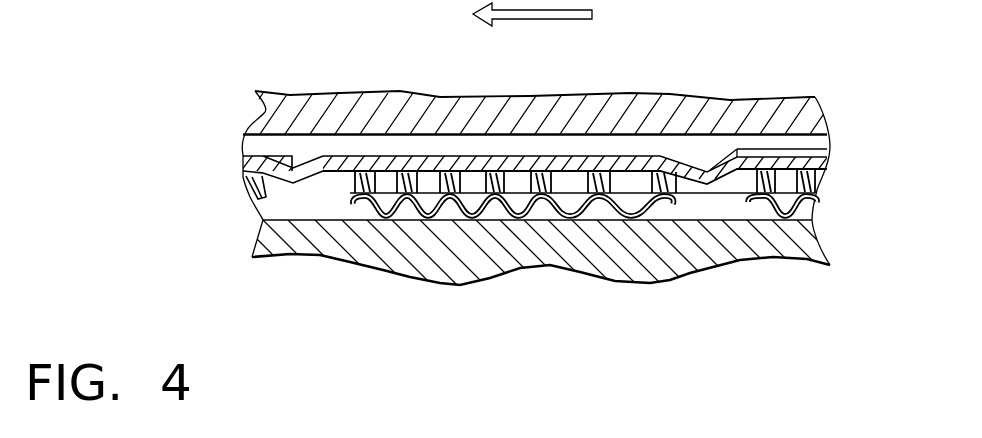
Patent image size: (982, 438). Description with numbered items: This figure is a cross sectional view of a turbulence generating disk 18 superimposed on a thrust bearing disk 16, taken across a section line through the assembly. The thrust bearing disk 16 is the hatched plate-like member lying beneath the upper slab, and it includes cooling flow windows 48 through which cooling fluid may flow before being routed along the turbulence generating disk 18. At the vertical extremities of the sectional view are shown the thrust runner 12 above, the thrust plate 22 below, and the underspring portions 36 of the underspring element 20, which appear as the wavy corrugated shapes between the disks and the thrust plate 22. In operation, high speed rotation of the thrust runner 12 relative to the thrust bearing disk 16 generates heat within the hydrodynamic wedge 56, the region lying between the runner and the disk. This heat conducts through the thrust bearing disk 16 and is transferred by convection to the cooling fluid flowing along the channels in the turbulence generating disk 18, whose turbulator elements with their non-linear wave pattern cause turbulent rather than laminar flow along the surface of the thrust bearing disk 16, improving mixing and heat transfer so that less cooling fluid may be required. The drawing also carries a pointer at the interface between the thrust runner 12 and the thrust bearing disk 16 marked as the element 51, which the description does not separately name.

The thrust runner 12 is at (457, 110).
The lower surface of upper slab 51 is at (528, 130).
The hydrodynamic wedge 56 is at (648, 146).
The cooling flow windows 48 is at (312, 168).
The thrust bearing disk 16 is at (823, 158).
The turbulence generating disk 18 is at (257, 178).
The underspring portions 36 is at (630, 210).
The underspring element 20 is at (377, 206).
The thrust plate 22 is at (478, 247).